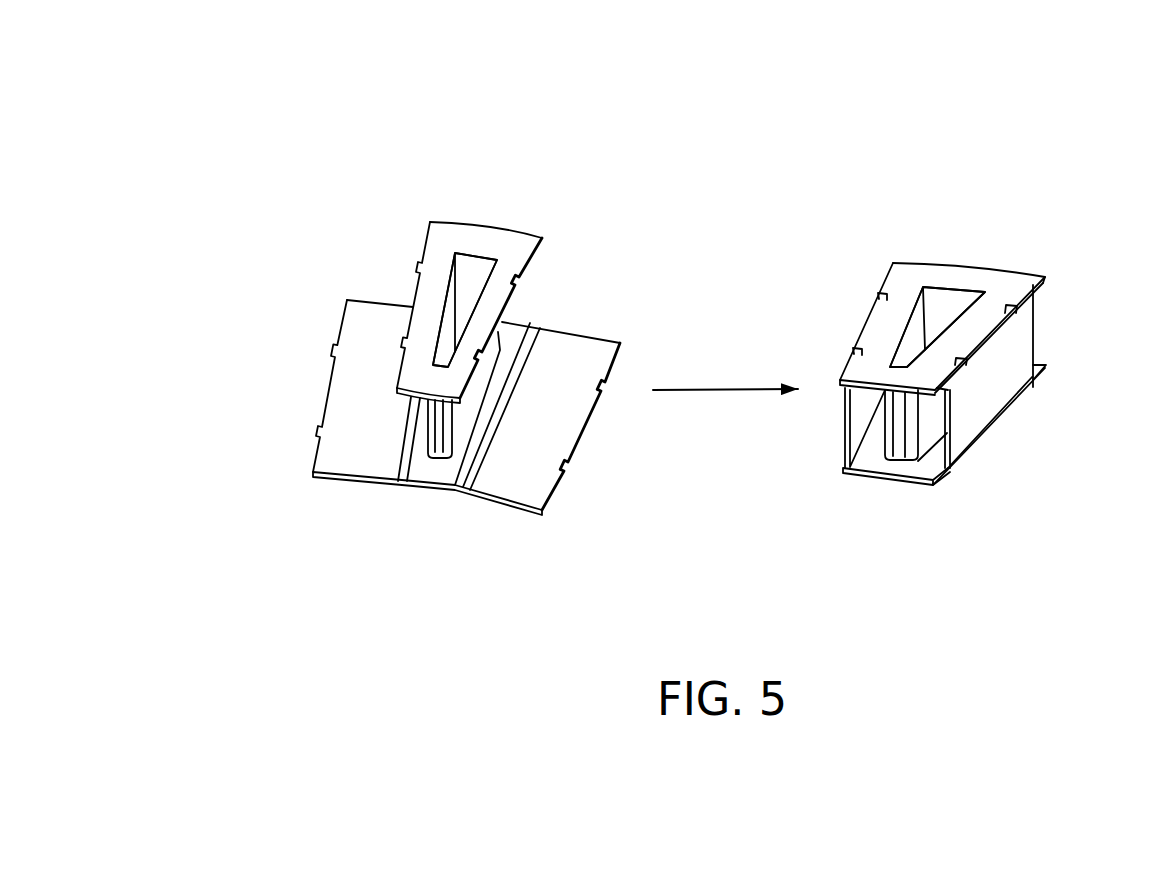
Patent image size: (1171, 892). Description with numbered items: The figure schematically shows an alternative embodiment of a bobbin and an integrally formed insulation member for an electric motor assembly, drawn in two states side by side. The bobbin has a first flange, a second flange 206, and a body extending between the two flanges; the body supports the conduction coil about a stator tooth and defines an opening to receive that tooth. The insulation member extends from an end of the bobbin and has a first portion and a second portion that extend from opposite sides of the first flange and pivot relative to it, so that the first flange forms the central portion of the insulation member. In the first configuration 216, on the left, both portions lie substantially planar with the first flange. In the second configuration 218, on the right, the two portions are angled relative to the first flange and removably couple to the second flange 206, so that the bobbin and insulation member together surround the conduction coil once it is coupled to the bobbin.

The second flange 206 is at (512, 249).
The first configuration 216 is at (541, 126).
The second configuration 218 is at (1015, 191).